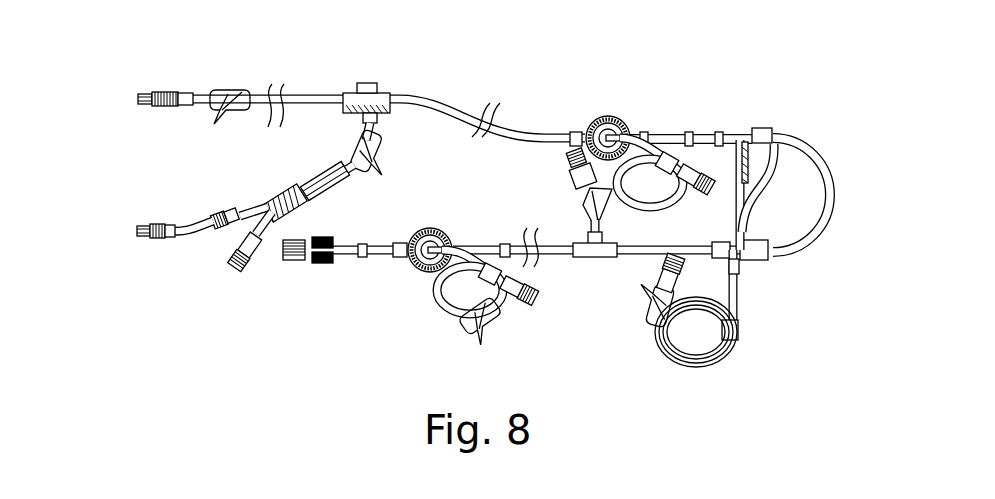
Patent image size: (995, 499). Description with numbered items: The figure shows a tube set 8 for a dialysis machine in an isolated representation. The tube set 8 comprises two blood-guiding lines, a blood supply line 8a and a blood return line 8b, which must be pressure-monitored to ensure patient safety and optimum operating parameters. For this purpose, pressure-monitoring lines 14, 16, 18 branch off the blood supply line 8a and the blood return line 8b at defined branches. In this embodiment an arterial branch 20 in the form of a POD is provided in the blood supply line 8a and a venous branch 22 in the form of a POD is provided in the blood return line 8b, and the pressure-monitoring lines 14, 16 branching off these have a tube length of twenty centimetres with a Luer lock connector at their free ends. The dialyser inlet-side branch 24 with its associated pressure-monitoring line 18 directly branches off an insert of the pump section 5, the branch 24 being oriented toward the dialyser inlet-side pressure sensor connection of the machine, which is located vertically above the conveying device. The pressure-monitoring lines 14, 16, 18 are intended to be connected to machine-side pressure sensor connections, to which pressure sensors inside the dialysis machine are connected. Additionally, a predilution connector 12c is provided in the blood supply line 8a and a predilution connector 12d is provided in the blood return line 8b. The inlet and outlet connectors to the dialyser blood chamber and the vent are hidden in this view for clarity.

The tube set 8 is at (118, 128).
The blood supply line 8a is at (303, 98).
The blood return line 8b is at (350, 260).
The predilution connector 12c is at (220, 232).
The predilution connector 12d is at (593, 257).
The pressure-monitoring line 14 is at (682, 135).
The pressure-monitoring line 16 is at (505, 322).
The pressure-monitoring line 18 is at (717, 363).
The arterial branch 20 is at (607, 117).
The venous branch 22 is at (420, 227).
The dialyser inlet-side branch 24 is at (740, 277).
The pump section 5 is at (802, 243).